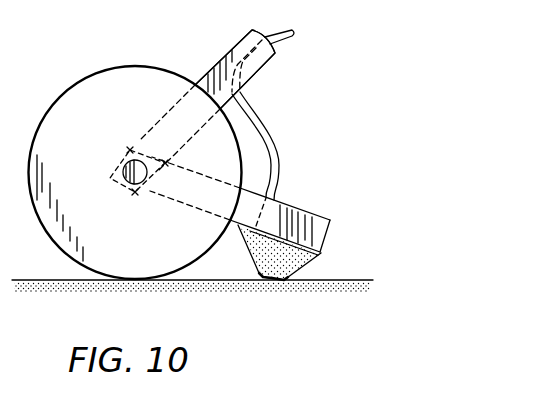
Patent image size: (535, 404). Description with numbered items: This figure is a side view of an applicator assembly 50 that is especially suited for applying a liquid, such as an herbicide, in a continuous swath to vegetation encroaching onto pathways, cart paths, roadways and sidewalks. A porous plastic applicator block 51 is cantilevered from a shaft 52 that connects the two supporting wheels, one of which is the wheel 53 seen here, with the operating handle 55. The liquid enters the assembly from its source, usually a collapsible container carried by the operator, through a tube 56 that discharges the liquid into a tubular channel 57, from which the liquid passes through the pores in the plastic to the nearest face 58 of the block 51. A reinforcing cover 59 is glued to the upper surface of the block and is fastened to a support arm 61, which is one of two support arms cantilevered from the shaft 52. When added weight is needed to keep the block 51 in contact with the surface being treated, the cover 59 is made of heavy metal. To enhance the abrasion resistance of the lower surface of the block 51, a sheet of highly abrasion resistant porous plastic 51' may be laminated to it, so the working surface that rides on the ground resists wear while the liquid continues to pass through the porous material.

The applicator assembly 50 is at (302, 108).
The porous plastic applicator block 51 is at (304, 297).
The abrasion resistant porous plastic sheet 51' is at (280, 300).
The shaft 52 is at (119, 165).
The supporting wheel 53 is at (88, 77).
The operating handle 55 is at (266, 63).
The tube 56 is at (281, 153).
The tubular channel 57 is at (246, 243).
The face of the block 58 is at (254, 262).
The reinforcing cover 59 is at (322, 254).
The support arm 61 is at (307, 212).